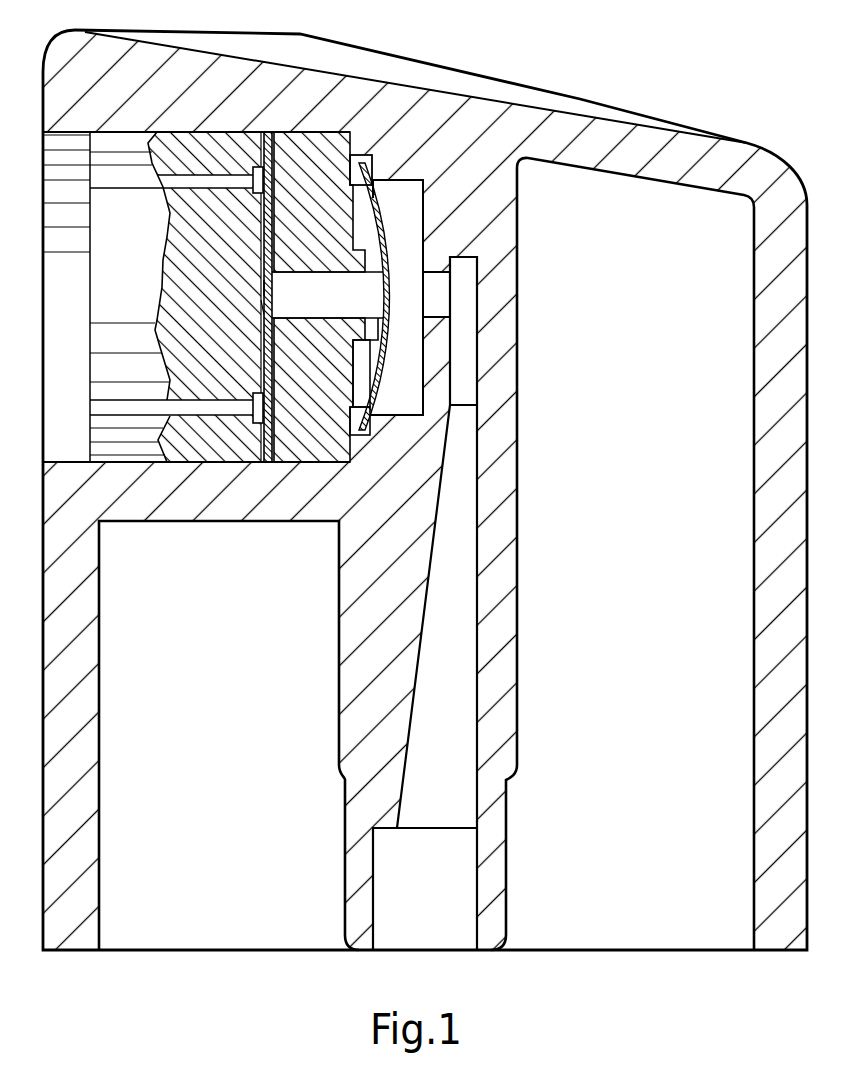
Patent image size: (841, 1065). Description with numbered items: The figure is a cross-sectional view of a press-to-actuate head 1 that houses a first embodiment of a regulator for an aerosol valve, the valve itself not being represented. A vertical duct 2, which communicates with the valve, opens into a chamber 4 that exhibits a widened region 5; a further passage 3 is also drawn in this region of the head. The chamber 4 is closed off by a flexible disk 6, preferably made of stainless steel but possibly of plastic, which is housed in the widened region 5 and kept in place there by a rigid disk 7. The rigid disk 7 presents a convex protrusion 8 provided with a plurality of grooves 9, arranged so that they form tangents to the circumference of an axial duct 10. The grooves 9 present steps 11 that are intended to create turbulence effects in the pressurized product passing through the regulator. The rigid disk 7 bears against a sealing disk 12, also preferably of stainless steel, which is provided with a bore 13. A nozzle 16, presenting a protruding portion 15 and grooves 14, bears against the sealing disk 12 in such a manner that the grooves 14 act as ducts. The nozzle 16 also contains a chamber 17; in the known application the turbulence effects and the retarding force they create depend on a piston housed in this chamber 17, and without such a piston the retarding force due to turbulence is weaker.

The press-to-actuate head 1 is at (388, 90).
The vertical duct 2 is at (470, 372).
The passage 3 is at (445, 303).
The chamber 4 is at (407, 227).
The widened region 5 is at (355, 160).
The flexible disk 6 is at (382, 242).
The rigid disk 7 is at (313, 135).
The convex protrusion 8 is at (360, 427).
The grooves 9 is at (363, 353).
The axial duct 10 is at (332, 310).
The steps 11 is at (373, 325).
The sealing disk 12 is at (268, 133).
The bore 13 is at (268, 288).
The grooves 14 is at (257, 378).
The protruding portion 15 is at (270, 216).
The nozzle 16 is at (163, 142).
The chamber 17 is at (260, 307).